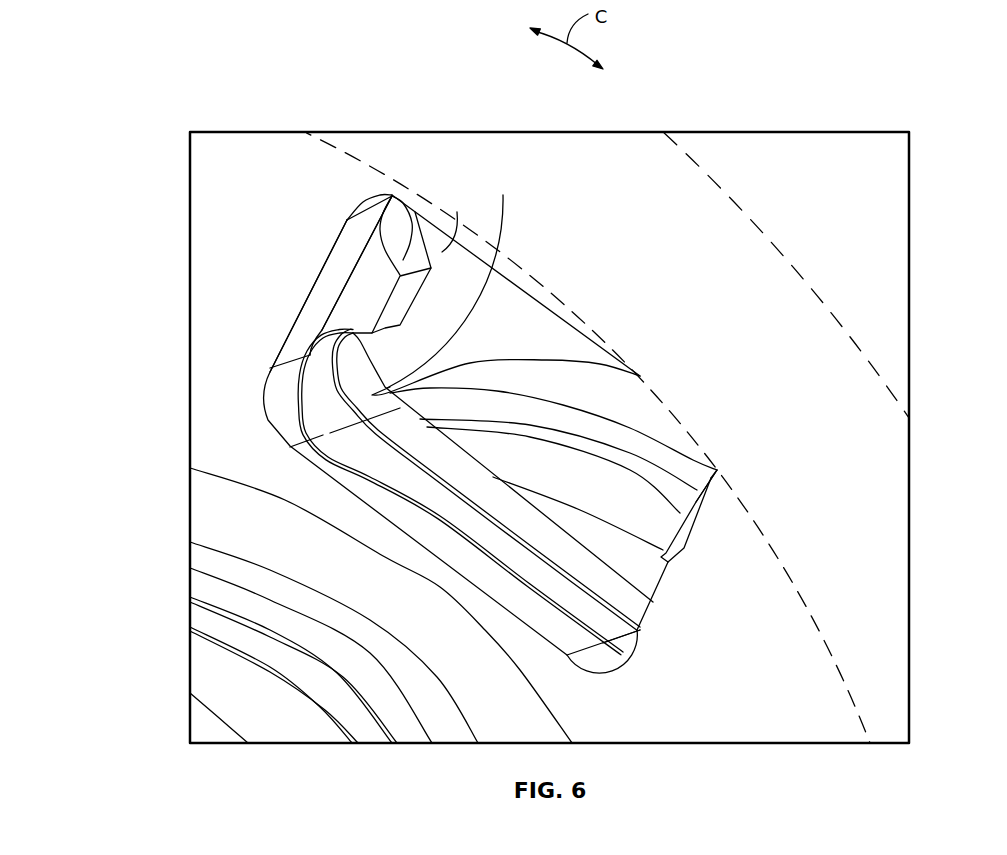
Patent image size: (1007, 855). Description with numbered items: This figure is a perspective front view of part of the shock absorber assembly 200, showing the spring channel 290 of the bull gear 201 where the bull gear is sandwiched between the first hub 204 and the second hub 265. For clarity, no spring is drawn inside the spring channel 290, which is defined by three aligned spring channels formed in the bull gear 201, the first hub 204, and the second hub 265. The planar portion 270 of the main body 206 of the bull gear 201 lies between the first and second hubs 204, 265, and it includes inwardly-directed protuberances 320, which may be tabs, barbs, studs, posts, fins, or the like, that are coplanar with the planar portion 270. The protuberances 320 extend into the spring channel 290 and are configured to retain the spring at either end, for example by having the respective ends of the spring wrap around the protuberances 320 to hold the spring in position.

The shock absorber assembly 200 is at (878, 210).
The bull gear 201 is at (372, 260).
The first hub 204 is at (255, 322).
The main body 206 is at (367, 282).
The second hub 265 is at (503, 195).
The planar portion 270 is at (360, 303).
The spring channel 290 is at (457, 212).
The protuberances 320 is at (388, 196).